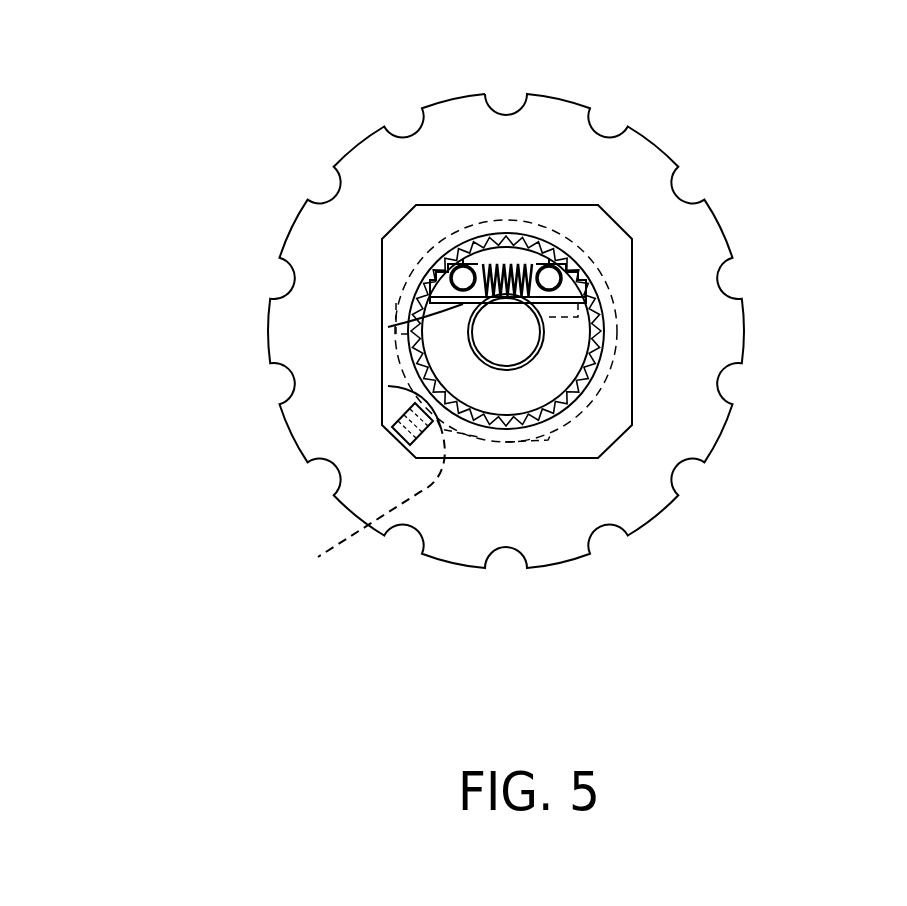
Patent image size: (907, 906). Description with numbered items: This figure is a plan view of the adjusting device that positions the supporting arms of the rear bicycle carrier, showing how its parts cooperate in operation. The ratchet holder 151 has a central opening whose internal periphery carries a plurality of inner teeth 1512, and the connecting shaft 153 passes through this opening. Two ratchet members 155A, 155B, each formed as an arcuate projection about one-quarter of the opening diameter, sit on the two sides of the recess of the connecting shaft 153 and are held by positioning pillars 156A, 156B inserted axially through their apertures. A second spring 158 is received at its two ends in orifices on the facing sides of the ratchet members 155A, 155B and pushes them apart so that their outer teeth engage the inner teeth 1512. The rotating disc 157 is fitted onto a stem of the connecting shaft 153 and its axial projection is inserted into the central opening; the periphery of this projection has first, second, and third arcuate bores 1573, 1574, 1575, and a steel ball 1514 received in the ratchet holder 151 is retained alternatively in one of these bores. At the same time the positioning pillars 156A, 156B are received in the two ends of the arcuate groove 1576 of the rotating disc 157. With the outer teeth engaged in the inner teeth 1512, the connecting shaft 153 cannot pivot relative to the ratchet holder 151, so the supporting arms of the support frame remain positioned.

The ratchet holder 151 is at (398, 218).
The connecting shaft 153 is at (513, 345).
The ratchet member 155A is at (571, 285).
The ratchet member 155B is at (440, 278).
The positioning pillar 156A is at (551, 265).
The positioning pillar 156B is at (462, 268).
The rotating disc 157 is at (719, 318).
The second spring 158 is at (505, 265).
The inner teeth 1512 is at (600, 305).
The steel ball 1514 is at (342, 504).
The first arcuate bore 1573 is at (381, 345).
The second arcuate bore 1574 is at (388, 386).
The third arcuate bore 1575 is at (490, 432).
The arcuate groove 1576 is at (388, 326).